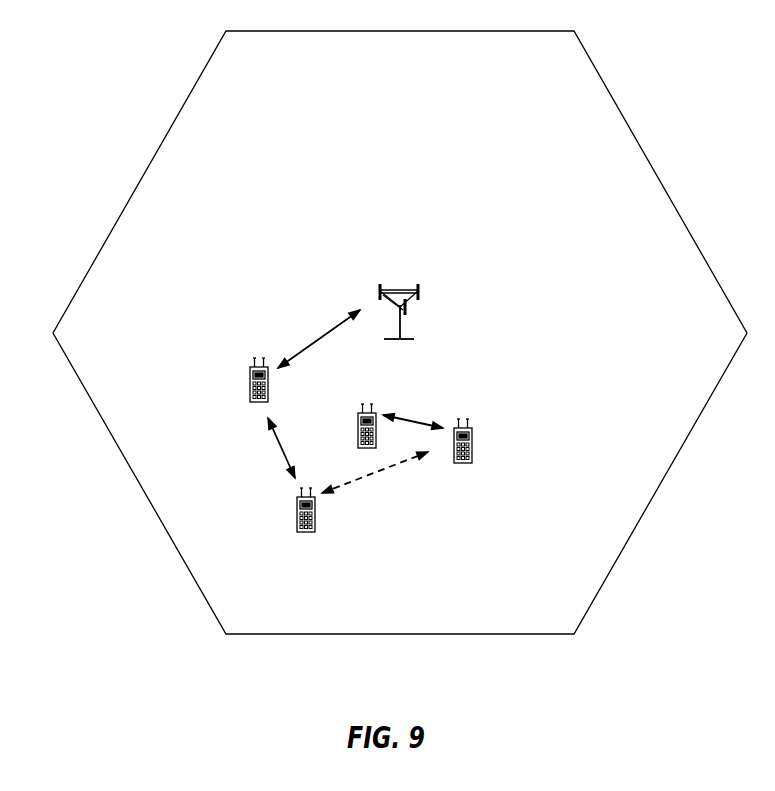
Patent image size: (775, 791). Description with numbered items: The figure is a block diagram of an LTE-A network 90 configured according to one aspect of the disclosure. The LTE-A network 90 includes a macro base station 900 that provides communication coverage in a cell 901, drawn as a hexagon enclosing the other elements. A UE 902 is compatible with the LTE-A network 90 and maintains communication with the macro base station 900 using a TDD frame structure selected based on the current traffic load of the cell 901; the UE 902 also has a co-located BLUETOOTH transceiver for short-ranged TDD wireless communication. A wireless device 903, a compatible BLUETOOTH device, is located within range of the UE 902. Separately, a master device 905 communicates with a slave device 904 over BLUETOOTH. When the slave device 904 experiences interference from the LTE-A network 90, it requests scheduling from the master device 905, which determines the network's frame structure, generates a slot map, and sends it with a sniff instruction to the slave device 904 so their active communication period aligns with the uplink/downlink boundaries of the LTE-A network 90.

The LTE-A network 90 is at (120, 73).
The macro base station 900 is at (405, 343).
The cell 901 is at (687, 434).
The UE 902 is at (257, 402).
The wireless device 903 is at (297, 532).
The slave device 904 is at (357, 418).
The master device 905 is at (459, 463).